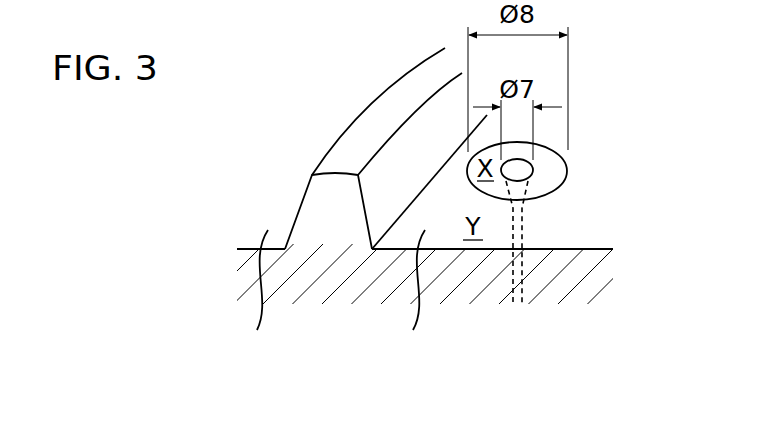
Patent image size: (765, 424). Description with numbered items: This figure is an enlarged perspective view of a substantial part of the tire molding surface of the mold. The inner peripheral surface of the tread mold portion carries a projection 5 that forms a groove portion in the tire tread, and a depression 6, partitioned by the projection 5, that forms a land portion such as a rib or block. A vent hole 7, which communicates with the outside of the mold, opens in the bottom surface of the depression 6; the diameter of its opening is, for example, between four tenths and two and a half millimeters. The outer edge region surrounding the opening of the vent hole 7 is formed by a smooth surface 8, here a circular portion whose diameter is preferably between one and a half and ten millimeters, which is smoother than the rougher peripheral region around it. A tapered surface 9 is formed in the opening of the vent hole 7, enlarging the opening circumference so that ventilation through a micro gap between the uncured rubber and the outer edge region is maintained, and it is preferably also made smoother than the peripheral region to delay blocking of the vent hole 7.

The projection 5 is at (376, 118).
The depression 6 is at (411, 268).
The vent hole 7 is at (533, 170).
The smooth surface 8 is at (562, 185).
The tapered surface 9 is at (537, 200).